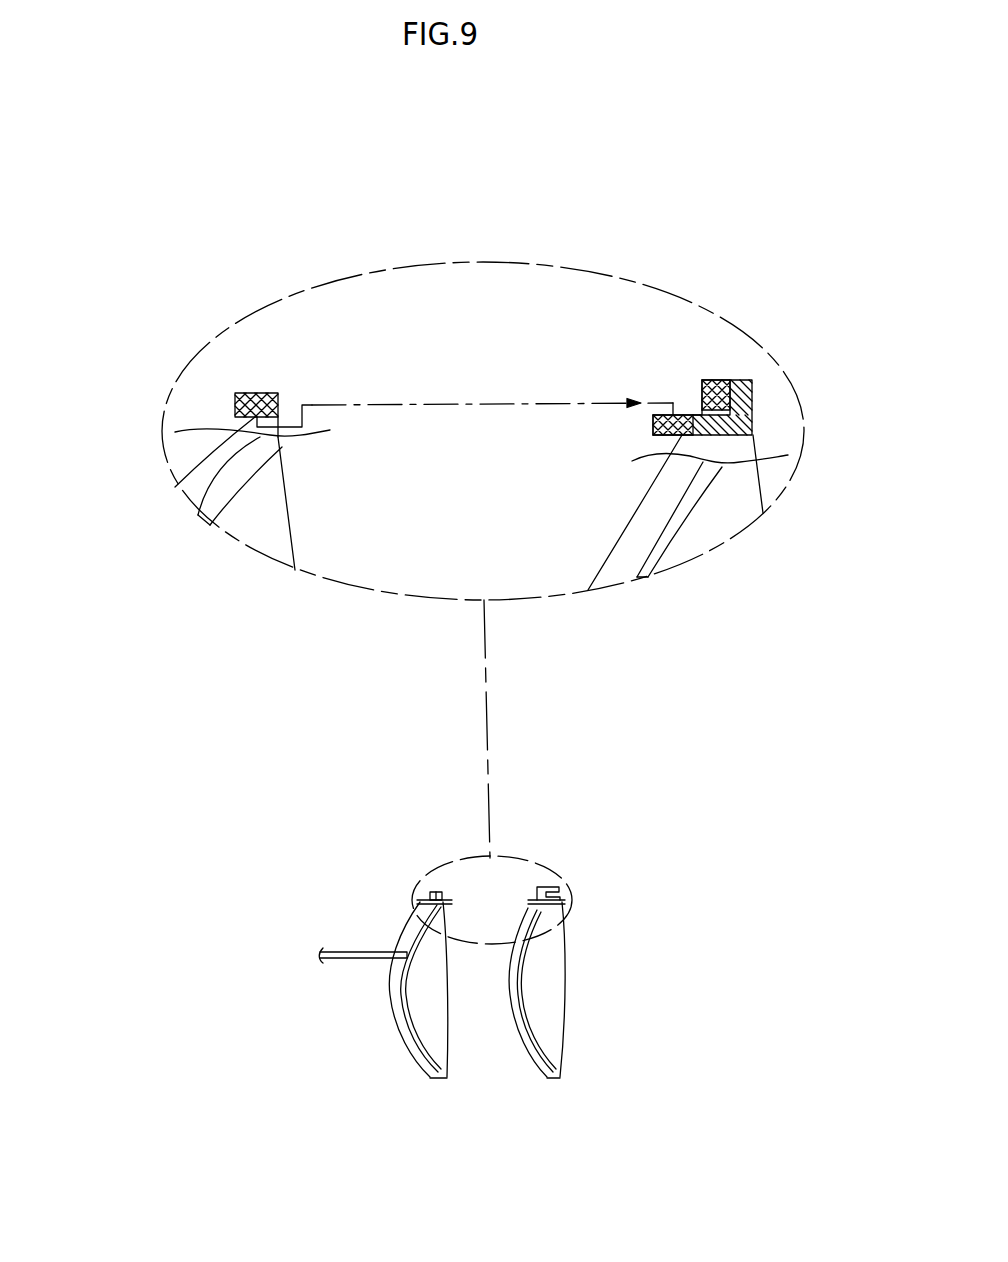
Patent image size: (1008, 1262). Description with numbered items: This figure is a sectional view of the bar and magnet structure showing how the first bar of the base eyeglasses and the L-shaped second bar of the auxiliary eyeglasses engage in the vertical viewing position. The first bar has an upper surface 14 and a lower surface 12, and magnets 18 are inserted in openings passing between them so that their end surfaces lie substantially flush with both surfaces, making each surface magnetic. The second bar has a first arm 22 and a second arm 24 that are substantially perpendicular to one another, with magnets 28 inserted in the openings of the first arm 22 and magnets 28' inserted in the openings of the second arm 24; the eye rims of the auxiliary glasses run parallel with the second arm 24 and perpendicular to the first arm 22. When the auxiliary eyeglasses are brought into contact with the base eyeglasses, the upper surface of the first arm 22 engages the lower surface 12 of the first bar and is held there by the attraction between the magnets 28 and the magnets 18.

The lower surface 12 is at (235, 415).
The upper surface 14 is at (278, 393).
The magnets 18 is at (253, 393).
The first arm 22 is at (698, 415).
The second arm 24 is at (752, 400).
The magnets 28 is at (633, 512).
The magnets 28' is at (786, 298).